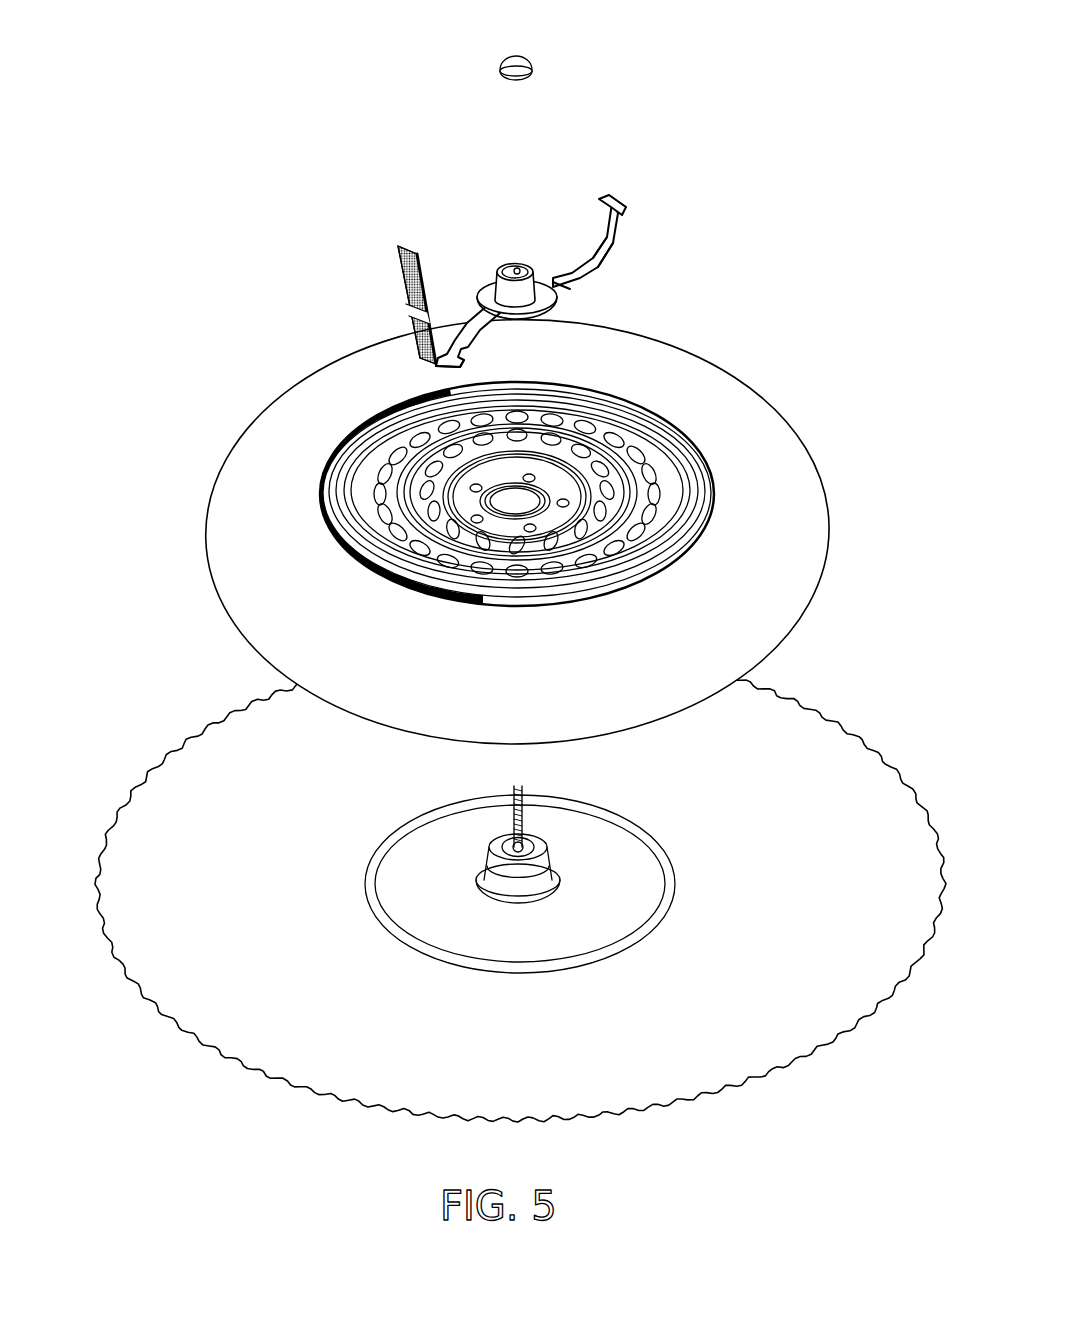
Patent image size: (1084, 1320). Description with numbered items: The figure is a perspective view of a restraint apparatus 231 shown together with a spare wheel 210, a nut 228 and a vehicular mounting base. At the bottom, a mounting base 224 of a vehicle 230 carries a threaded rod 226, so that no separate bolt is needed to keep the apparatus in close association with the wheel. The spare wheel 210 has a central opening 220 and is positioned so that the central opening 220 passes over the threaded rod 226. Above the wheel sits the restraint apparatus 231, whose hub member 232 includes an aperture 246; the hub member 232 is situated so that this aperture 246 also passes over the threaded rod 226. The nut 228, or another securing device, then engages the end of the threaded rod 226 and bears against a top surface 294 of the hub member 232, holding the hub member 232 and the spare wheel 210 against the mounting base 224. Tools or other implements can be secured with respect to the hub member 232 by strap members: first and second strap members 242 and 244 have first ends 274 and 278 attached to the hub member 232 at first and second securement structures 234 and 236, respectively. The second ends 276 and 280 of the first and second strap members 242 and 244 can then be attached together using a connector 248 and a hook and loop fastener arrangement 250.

The spare wheel 210 is at (242, 357).
The central opening 220 is at (512, 508).
The mounting base 224 is at (357, 857).
The threaded rod 226 is at (523, 812).
The nut 228 is at (516, 56).
The vehicle 230 is at (193, 710).
The restraint apparatus 231 is at (514, 253).
The hub member 232 is at (480, 247).
The first securement structure 234 is at (497, 323).
The second securement structure 236 is at (570, 290).
The first strap member 242 is at (462, 358).
The second strap member 244 is at (617, 250).
The aperture 246 is at (519, 269).
The connector 248 is at (612, 198).
The hook and loop fastener arrangement 250 is at (393, 305).
The first end 274 is at (463, 320).
The second end 276 is at (385, 235).
The first end 278 is at (588, 278).
The second end 280 is at (632, 217).
The top surface 294 is at (508, 263).